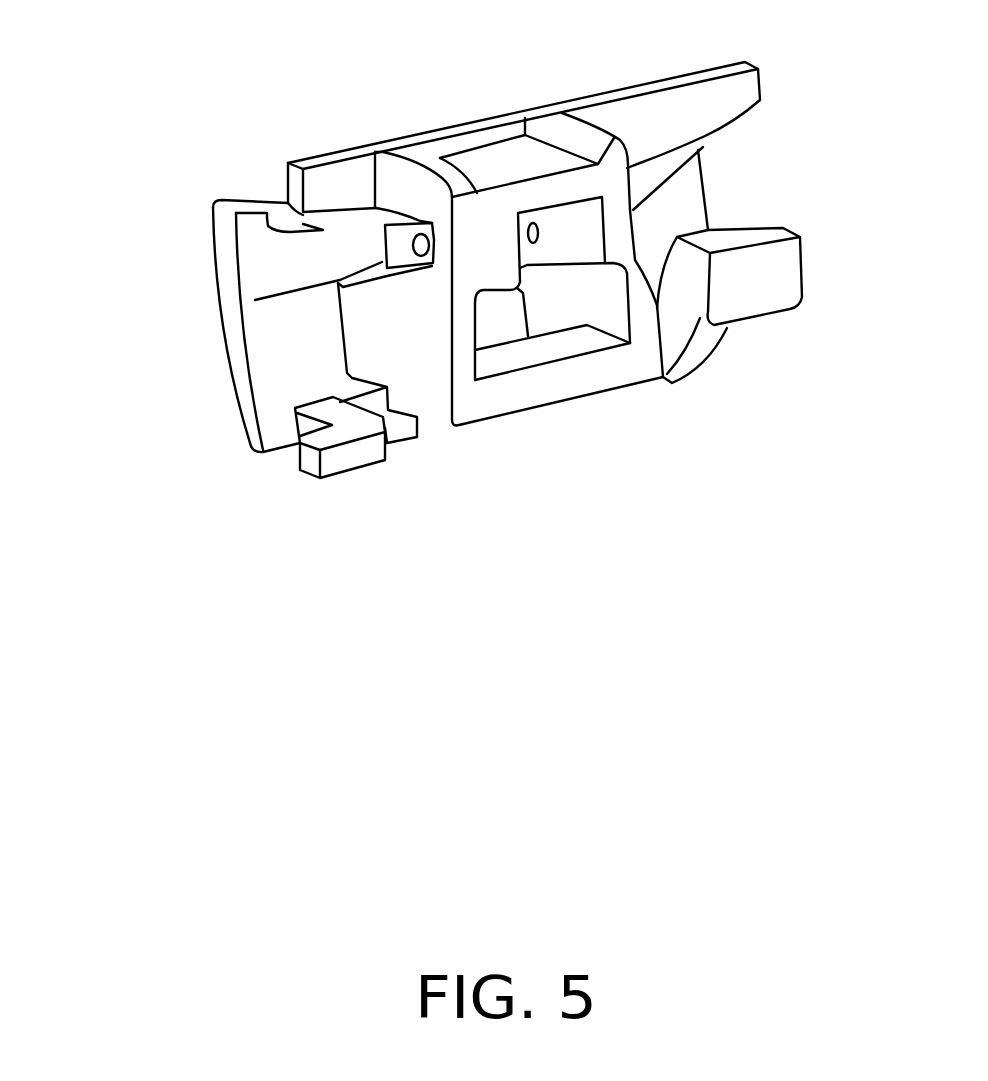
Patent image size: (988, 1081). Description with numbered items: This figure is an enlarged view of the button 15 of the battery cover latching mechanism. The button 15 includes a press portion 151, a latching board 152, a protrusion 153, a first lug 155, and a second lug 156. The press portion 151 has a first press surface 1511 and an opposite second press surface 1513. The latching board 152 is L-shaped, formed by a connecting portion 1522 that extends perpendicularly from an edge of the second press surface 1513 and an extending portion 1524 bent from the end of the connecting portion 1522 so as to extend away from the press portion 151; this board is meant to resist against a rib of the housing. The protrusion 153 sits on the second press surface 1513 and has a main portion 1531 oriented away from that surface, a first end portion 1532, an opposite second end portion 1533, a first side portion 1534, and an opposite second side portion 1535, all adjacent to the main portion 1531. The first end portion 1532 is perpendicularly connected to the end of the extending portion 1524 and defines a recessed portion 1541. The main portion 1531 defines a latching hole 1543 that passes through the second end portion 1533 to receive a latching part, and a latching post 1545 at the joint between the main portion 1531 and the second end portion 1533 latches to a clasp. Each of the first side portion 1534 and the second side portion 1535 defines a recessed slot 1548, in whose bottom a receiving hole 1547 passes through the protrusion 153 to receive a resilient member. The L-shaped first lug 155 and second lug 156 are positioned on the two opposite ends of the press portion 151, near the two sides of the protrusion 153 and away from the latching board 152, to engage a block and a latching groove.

The button 15 is at (368, 112).
The latching board 152 is at (125, 70).
The extending portion 1524 is at (325, 158).
The connecting portion 1522 is at (281, 190).
The first end portion 1532 is at (423, 160).
The recessed portion 1541 is at (513, 160).
The second side portion 1535 is at (690, 176).
The first lug 155 is at (767, 282).
The protrusion 153 is at (676, 378).
The second end portion 1533 is at (500, 418).
The main portion 1531 is at (490, 248).
The latching hole 1543 is at (596, 287).
The latching post 1545 is at (547, 387).
The recessed slot 1548 is at (418, 246).
The receiving hole 1547 is at (250, 303).
The first side portion 1534 is at (438, 363).
The press portion 151 is at (88, 355).
The first press surface 1511 is at (222, 347).
The second press surface 1513 is at (273, 377).
The second lug 156 is at (337, 462).